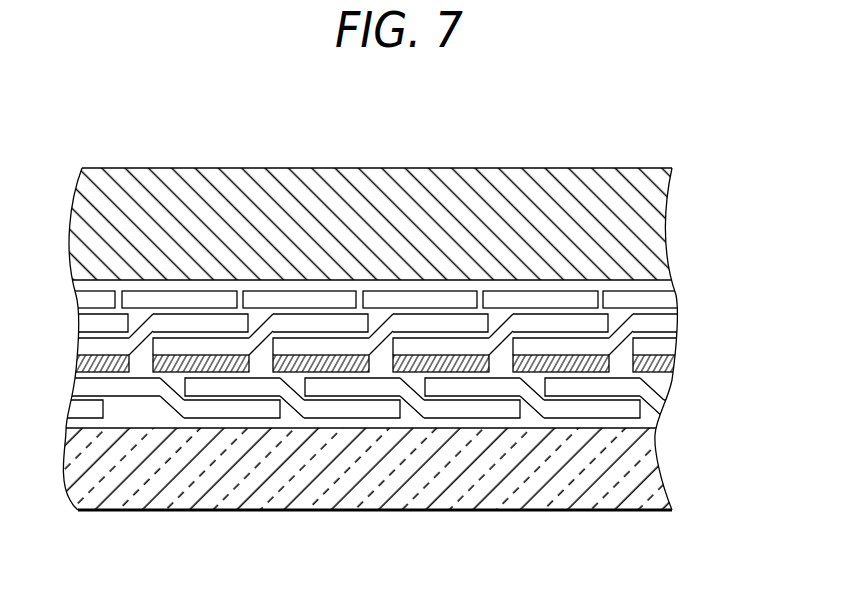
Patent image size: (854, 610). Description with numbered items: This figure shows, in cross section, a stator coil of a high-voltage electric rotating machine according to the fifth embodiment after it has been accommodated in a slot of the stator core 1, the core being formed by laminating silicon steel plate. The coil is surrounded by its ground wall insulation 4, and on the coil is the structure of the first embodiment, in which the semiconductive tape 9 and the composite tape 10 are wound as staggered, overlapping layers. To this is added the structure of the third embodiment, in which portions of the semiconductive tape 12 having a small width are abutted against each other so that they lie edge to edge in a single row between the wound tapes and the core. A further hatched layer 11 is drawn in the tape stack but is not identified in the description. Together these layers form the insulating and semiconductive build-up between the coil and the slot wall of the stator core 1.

The stator core 1 is at (417, 172).
The ground wall insulation 4 is at (568, 497).
The semiconductive tape 9 is at (200, 295).
The composite tape 10 is at (695, 315).
The electrode 11 is at (328, 372).
The semiconductive tape having a small width 12 is at (671, 299).